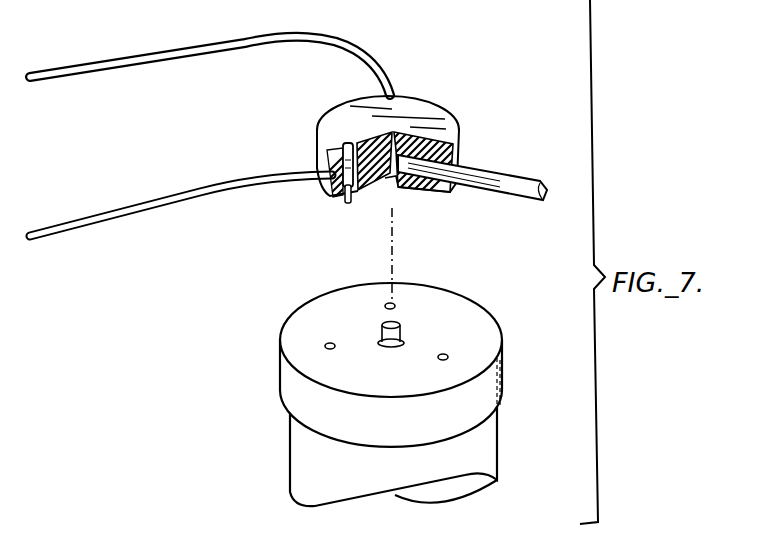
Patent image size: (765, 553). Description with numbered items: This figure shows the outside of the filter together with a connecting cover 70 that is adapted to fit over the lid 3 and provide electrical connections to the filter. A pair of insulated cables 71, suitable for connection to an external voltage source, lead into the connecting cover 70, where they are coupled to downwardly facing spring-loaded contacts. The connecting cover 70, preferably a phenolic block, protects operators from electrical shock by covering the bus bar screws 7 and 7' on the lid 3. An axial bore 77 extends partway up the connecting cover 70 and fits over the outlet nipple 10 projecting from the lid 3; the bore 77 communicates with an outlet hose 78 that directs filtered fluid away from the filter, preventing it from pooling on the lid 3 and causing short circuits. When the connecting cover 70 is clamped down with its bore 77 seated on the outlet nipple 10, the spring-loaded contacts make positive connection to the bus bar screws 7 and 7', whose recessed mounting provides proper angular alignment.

The lid 3 is at (486, 338).
The bus bar screw 7 is at (345, 337).
The bus bar screw 7' is at (365, 281).
The outlet nipple 10 is at (400, 330).
The connecting cover 70 is at (457, 50).
The insulated cables 71 is at (346, 26).
The axial bore 77 is at (397, 194).
The outlet hose 78 is at (545, 160).